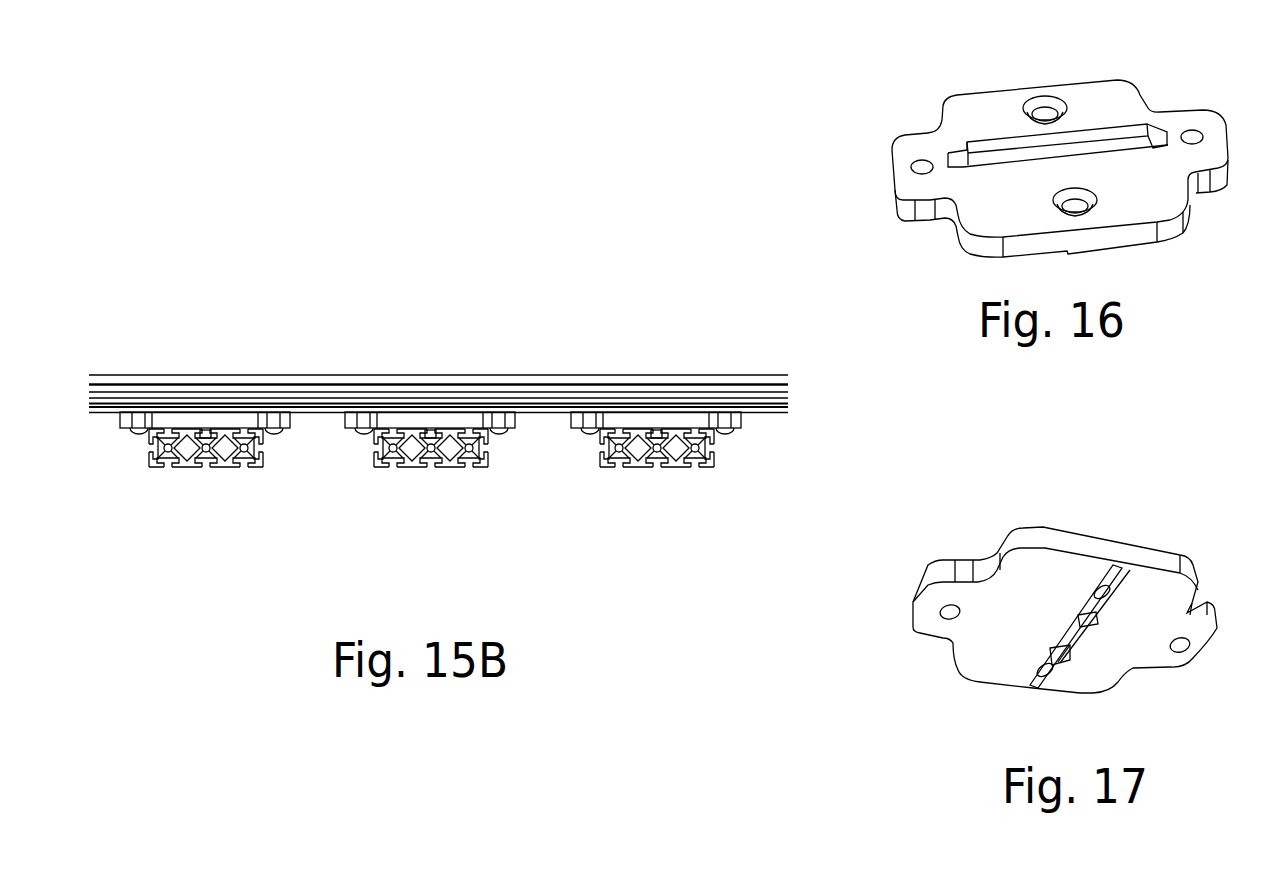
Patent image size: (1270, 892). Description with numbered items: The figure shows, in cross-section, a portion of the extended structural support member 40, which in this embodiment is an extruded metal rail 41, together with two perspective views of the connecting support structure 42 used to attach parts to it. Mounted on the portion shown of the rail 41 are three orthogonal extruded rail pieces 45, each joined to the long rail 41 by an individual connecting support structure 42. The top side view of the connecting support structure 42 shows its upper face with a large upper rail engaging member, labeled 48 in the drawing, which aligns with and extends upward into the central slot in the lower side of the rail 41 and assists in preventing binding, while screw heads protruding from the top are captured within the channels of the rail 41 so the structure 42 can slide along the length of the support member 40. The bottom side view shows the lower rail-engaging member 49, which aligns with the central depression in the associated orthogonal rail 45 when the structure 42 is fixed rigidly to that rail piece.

In FIG. 15B, the extended structural support member 40 is at (438, 371).
In FIG. 15B, the extruded metal rail 41 is at (222, 381).
In FIG. 15B, the connecting support structure 42 is at (123, 418).
In FIG. 16, the connecting support structure 42 is at (1066, 170).
In FIG. 17, the connecting support structure 42 is at (1076, 643).
In FIG. 15B, the orthogonal extruded rail piece 45 is at (181, 467).
In FIG. 16, the rib 48 is at (1130, 130).
In FIG. 17, the lower rail-engaging member 49 is at (1074, 643).